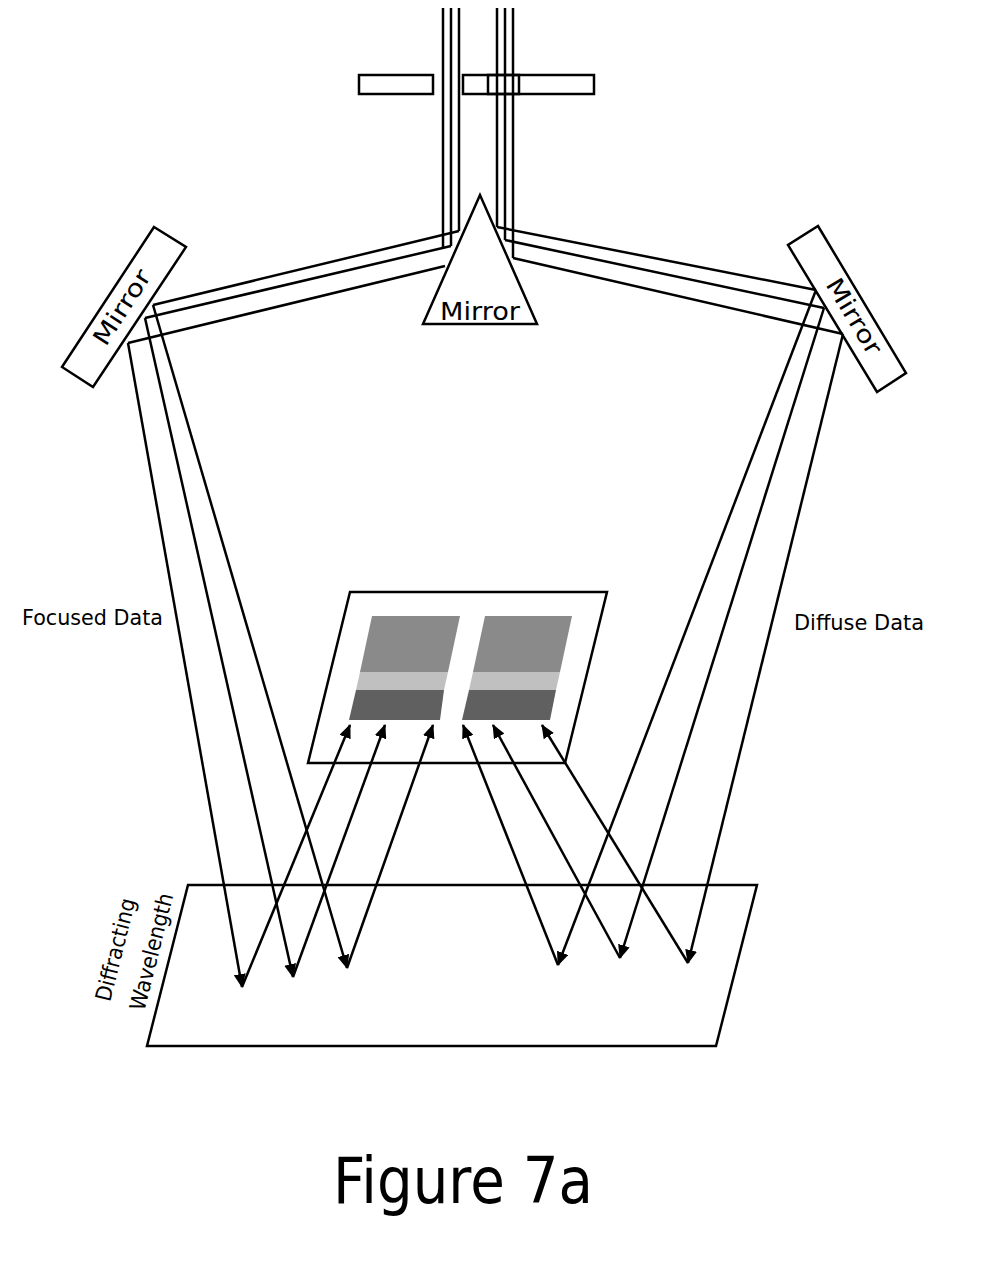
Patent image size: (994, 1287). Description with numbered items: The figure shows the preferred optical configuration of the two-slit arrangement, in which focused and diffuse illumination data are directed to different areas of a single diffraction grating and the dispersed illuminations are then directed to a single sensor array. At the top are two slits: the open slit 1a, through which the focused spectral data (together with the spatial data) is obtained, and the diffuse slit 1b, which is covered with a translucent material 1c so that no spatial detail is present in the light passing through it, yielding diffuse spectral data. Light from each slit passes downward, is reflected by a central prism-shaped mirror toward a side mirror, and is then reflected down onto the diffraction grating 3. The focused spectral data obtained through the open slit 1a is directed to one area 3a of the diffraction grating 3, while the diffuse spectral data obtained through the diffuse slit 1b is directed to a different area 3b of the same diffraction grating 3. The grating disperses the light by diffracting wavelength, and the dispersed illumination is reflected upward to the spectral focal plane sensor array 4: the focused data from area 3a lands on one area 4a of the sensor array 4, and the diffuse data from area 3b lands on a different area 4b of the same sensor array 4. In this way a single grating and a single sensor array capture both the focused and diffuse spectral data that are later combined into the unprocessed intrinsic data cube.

The open slit 1a is at (432, 70).
The diffuse slit 1b is at (522, 70).
The translucent material 1c is at (522, 95).
The diffraction grating 3 is at (446, 1030).
The area of diffraction grating 3a is at (293, 992).
The different area of diffraction grating 3b is at (638, 972).
The spectral focal plane sensor array 4 is at (458, 756).
The area of spectral focal plane sensor array 4a is at (395, 605).
The different area of spectral focal plane sensor array 4b is at (560, 605).